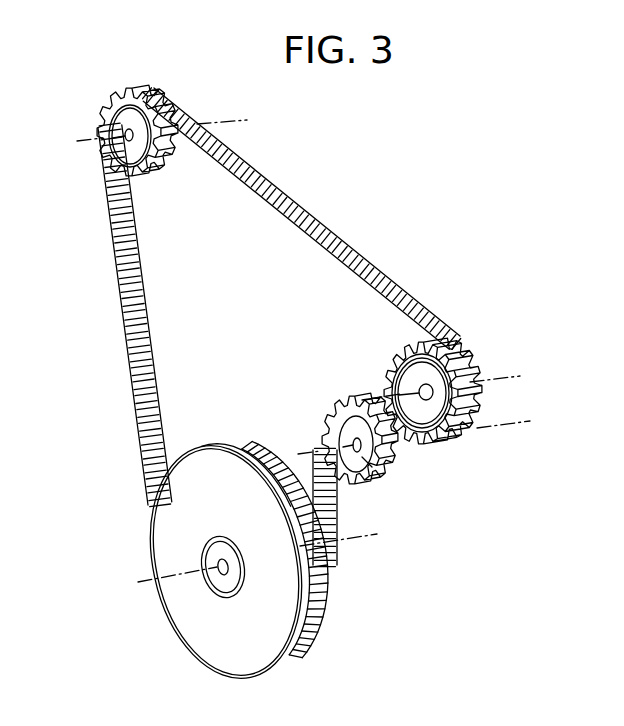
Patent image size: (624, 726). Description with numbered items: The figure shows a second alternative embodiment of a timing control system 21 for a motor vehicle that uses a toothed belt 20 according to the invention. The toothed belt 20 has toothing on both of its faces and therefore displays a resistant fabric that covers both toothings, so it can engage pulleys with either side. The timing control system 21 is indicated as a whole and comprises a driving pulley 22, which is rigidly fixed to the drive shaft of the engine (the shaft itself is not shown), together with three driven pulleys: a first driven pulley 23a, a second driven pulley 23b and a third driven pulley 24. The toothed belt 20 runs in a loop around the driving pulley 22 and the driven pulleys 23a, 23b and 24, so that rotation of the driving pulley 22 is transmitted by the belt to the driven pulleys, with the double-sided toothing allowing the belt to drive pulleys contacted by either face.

The toothed belt 20 is at (122, 318).
The timing control system 21 is at (380, 239).
The driving pulley 22 is at (182, 527).
The first driven pulley 23a is at (112, 106).
The second driven pulley 23b is at (395, 476).
The third driven pulley 24 is at (440, 358).